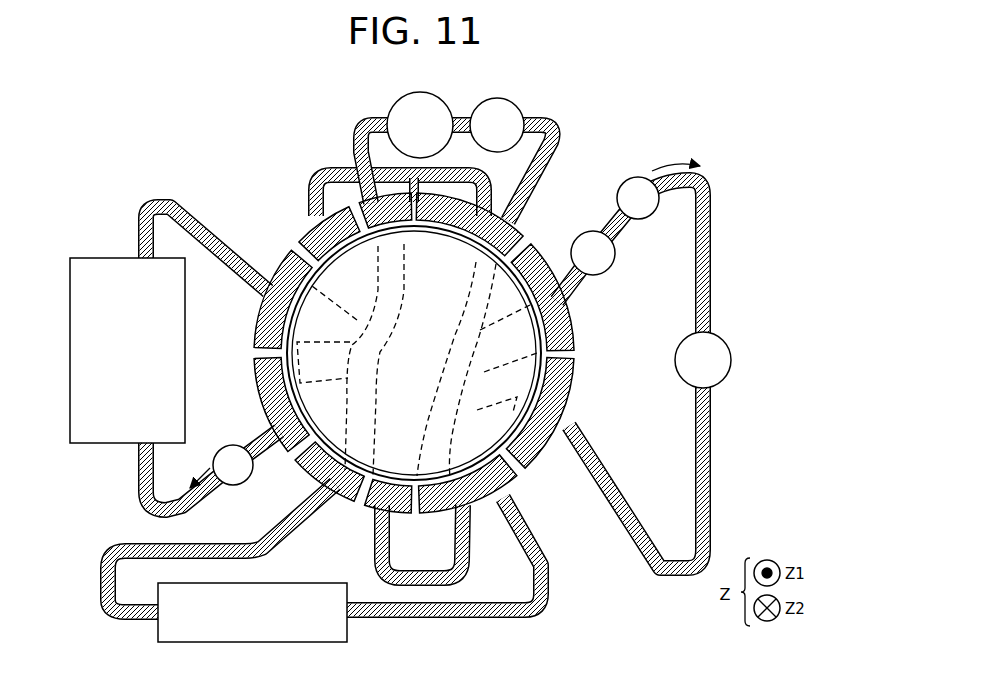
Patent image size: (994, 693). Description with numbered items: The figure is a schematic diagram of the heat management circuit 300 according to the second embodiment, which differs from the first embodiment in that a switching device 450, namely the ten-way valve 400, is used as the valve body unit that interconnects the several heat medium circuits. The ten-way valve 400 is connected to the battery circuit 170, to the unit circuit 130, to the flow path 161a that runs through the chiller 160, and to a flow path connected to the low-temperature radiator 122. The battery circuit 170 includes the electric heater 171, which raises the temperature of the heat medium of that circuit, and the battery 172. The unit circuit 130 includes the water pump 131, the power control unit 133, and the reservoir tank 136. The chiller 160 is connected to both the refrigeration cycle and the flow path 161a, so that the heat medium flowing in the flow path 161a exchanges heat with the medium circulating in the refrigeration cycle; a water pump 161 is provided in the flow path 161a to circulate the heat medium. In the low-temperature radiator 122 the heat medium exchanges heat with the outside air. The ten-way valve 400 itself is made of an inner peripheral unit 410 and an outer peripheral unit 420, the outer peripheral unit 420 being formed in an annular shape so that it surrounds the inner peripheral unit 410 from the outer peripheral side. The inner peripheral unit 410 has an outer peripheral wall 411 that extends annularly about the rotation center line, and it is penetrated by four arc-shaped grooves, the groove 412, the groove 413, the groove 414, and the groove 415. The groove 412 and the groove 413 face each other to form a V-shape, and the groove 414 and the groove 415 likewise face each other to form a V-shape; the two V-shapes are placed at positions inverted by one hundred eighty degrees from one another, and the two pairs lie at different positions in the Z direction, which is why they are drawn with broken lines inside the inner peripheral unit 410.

The heat management circuit 300 is at (40, 66).
The switching device 450 is at (252, 110).
The ten-way valve 400 is at (333, 143).
The outer peripheral unit 420 is at (416, 345).
The inner peripheral unit 410 is at (356, 262).
The flow path 161a is at (150, 205).
The chiller 160 is at (126, 258).
The groove 414 is at (268, 338).
The battery 172 is at (420, 92).
The electric heater 171 is at (503, 100).
The battery circuit 170 is at (556, 124).
The water pump 131 is at (636, 178).
The reservoir tank 136 is at (602, 272).
The unit circuit 130 is at (714, 293).
The power control unit 133 is at (726, 345).
The outer peripheral wall 411 is at (568, 304).
The groove 415 is at (580, 386).
The groove 413 is at (515, 482).
The groove 412 is at (343, 504).
The water pump 161 is at (233, 444).
The low-temperature radiator 122 is at (258, 643).